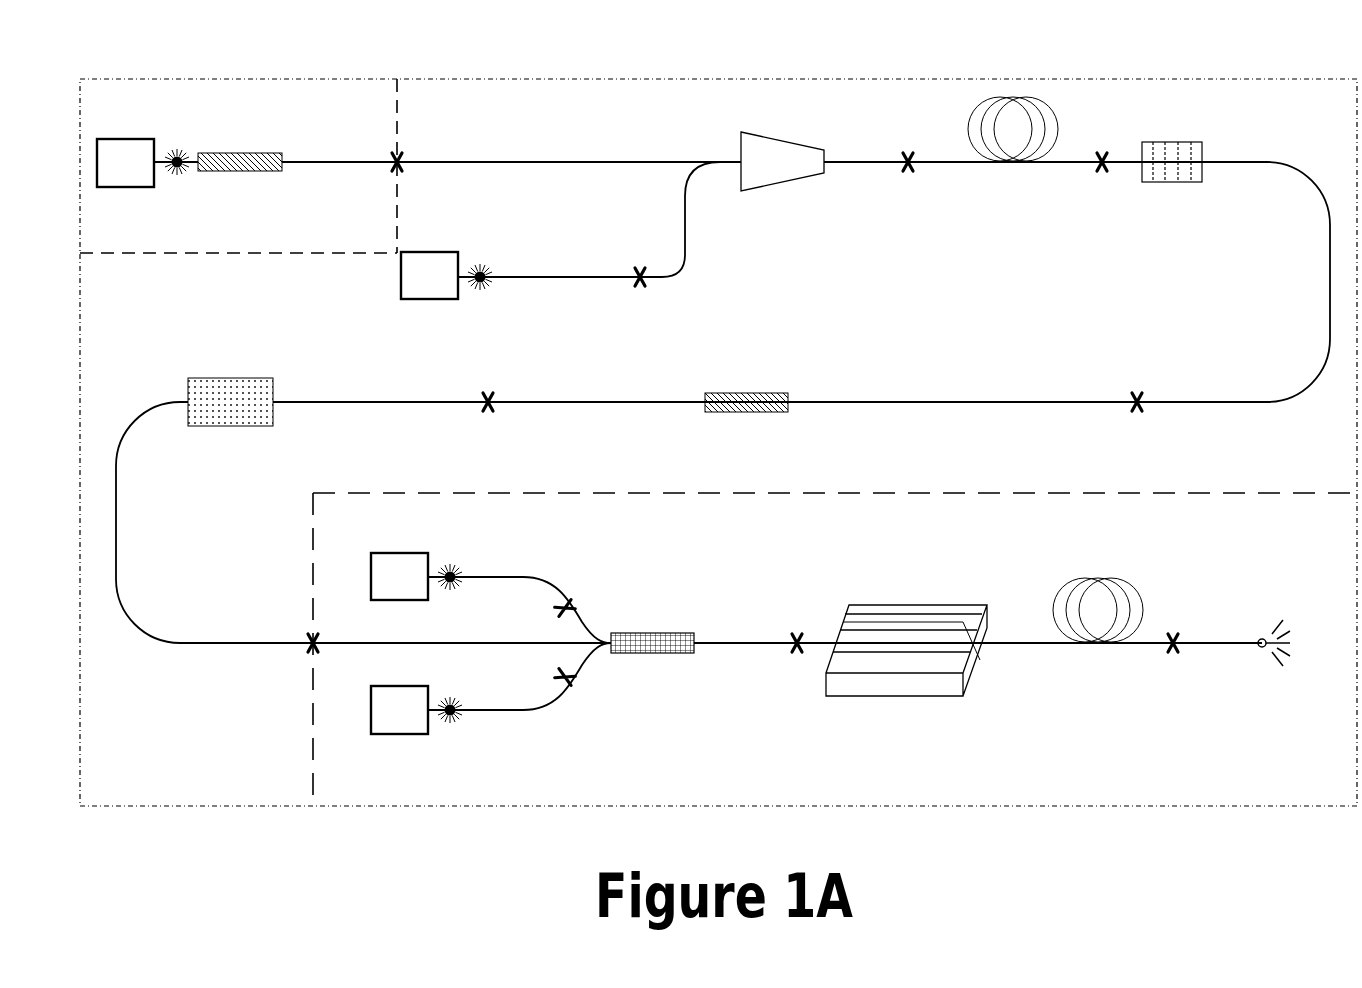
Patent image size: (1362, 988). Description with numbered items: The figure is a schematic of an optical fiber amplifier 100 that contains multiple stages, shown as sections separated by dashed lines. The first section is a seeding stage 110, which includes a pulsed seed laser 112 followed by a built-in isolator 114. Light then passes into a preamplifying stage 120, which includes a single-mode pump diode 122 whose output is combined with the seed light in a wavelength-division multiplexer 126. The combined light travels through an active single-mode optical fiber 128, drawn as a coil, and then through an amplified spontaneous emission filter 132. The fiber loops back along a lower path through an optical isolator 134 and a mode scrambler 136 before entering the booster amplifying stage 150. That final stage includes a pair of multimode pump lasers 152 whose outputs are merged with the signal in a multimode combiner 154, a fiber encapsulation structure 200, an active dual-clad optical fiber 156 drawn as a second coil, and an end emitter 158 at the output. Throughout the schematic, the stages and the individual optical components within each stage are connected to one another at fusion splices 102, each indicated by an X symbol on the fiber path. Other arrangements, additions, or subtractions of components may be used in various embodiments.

The optical fiber amplifier 100 is at (706, 34).
The seeding stage 110 is at (209, 65).
The preamplifying stage 120 is at (1224, 72).
The pulsed seed laser 112 is at (139, 136).
The built-in isolator 114 is at (240, 177).
The single-mode pump diode 122 is at (430, 306).
The wavelength-division multiplexer 126 is at (779, 133).
The active single-mode optical fiber 128 is at (1013, 170).
The amplified spontaneous emission filter 132 is at (1164, 190).
The fusion splice 102 is at (488, 380).
The mode scrambler 136 is at (223, 434).
The optical isolator 134 is at (752, 415).
The booster amplifying stage 150 is at (1163, 818).
The multimode pump lasers 152 is at (396, 549).
The multimode combiner 154 is at (641, 625).
The fiber encapsulation structure 200 is at (871, 598).
The active dual-clad optical fiber 156 is at (1092, 572).
The end emitter 158 is at (1254, 653).